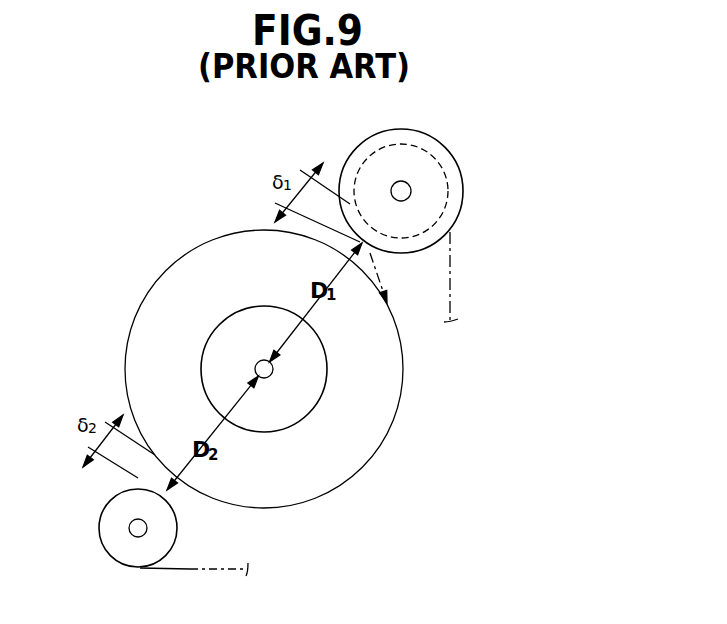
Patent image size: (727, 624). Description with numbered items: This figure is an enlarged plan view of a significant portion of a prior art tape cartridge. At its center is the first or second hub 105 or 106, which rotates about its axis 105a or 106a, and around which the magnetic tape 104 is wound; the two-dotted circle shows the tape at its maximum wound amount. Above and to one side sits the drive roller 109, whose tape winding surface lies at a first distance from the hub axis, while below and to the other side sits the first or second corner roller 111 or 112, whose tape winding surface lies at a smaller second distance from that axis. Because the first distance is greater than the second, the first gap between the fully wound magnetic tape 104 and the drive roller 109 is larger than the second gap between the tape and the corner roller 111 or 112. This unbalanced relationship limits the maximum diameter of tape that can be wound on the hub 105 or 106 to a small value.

The magnetic tape 104 is at (146, 296).
The first hub 105 is at (323, 370).
The second hub 106 is at (370, 369).
The axis of rotation of the first hub 105a is at (270, 376).
The axis of rotation of the second hub 106a is at (384, 425).
The drive roller 109 is at (455, 190).
The first corner roller 111 is at (163, 535).
The second corner roller 112 is at (255, 528).